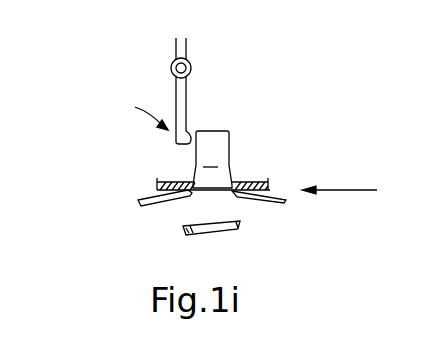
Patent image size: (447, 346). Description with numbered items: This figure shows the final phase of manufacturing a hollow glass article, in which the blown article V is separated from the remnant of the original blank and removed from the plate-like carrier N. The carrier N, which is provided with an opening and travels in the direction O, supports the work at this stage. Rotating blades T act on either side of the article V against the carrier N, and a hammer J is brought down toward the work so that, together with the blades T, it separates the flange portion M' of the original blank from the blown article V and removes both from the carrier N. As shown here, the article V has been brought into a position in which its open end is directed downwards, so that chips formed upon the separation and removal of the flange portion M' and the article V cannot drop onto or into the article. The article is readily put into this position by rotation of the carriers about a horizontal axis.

The hammer J is at (186, 97).
The blown article V is at (229, 150).
The plate-like carrier N is at (172, 180).
The rotating blades T is at (168, 199).
The flange portion M' is at (211, 241).
The direction of travel O is at (339, 179).